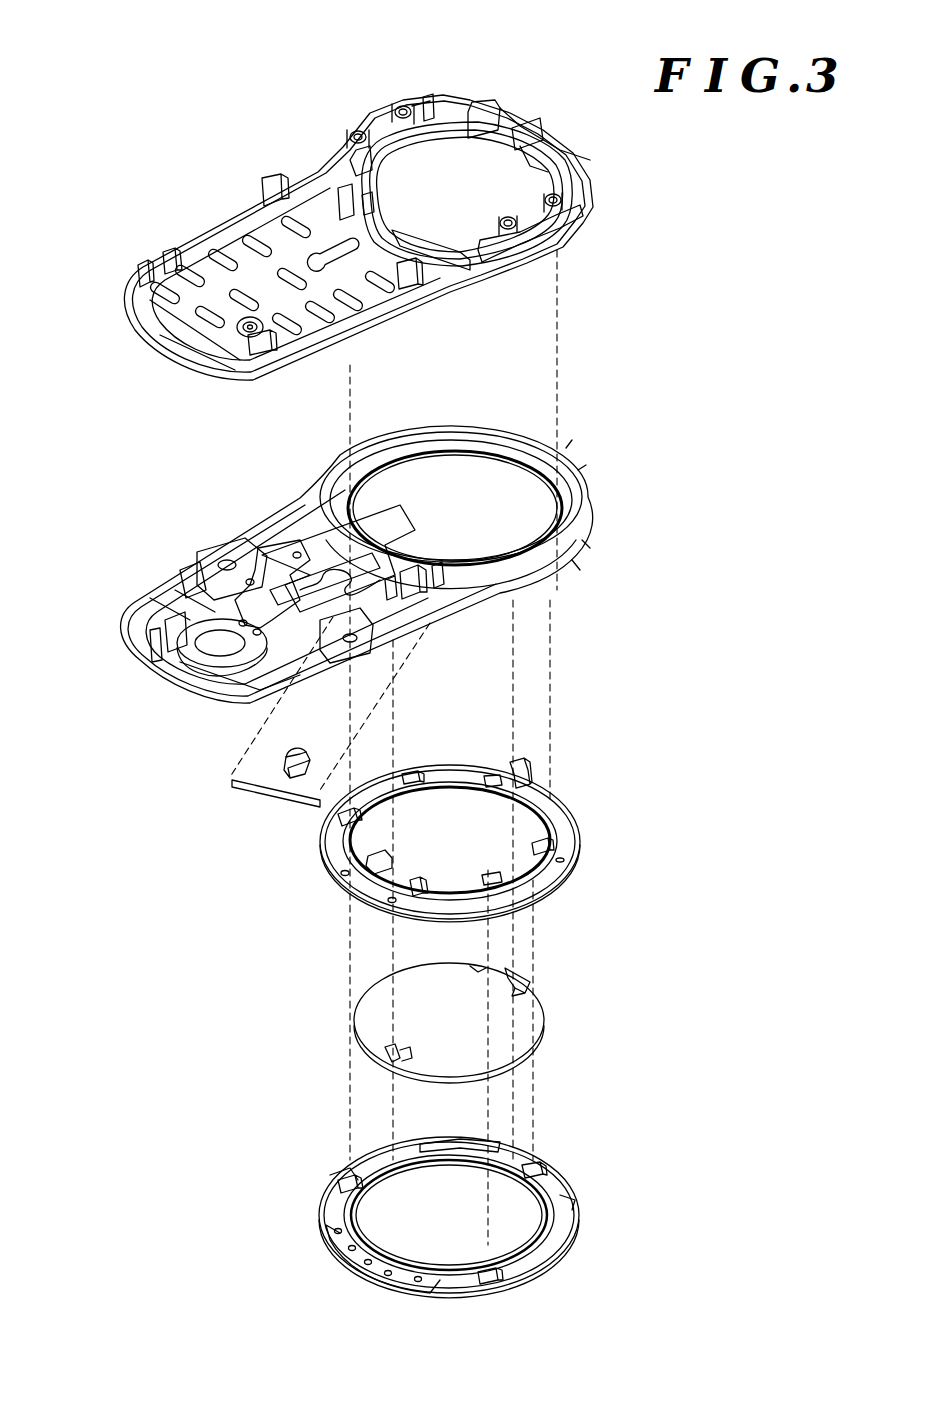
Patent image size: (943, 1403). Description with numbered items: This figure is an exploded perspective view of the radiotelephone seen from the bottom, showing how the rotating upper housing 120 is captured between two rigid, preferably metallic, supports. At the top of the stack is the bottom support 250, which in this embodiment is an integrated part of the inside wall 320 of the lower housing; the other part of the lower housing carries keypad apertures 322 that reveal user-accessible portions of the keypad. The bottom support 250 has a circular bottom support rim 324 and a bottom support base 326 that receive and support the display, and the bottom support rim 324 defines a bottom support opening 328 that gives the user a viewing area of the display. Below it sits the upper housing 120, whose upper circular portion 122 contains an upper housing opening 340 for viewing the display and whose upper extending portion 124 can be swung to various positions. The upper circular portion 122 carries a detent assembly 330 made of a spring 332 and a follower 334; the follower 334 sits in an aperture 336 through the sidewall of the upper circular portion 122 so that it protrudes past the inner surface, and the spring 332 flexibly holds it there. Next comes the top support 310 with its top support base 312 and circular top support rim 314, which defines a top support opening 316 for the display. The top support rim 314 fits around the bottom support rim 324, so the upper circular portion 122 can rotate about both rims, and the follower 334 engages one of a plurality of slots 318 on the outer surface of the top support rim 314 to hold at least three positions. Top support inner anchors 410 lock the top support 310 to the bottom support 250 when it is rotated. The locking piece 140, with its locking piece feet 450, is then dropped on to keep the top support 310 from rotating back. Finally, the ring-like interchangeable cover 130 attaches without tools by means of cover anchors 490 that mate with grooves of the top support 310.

The bottom support 250 is at (366, 230).
The inside wall 320 is at (270, 233).
The keypad apertures 322 is at (190, 270).
The bottom support rim 324 is at (420, 152).
The bottom support base 326 is at (424, 118).
The bottom support opening 328 is at (493, 193).
The upper housing 120 is at (357, 548).
The upper circular portion 122 is at (347, 467).
The upper housing opening 340 is at (453, 470).
The upper extending portion 124 is at (213, 553).
The aperture 336 is at (410, 582).
The detent assembly 330 is at (227, 780).
The follower 334 is at (287, 763).
The spring 332 is at (266, 790).
The top support 310 is at (470, 827).
The top support base 312 is at (573, 822).
The top support rim 314 is at (533, 867).
The top support opening 316 is at (453, 800).
The slots 318 is at (497, 783).
The top support inner anchors 410 is at (417, 777).
The locking piece 140 is at (494, 1028).
The locking piece feet 450 is at (523, 980).
The interchangeable cover 130 is at (464, 1225).
The cover anchors 490 is at (343, 1180).